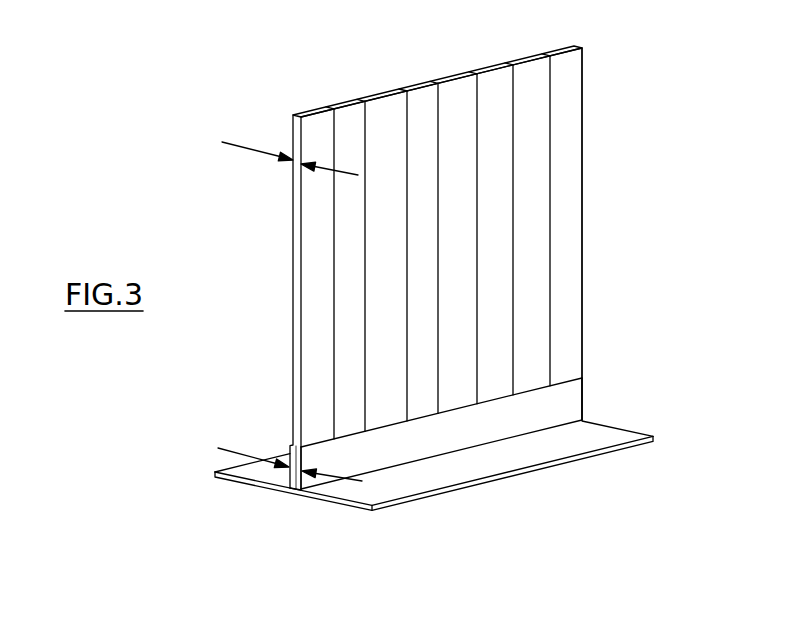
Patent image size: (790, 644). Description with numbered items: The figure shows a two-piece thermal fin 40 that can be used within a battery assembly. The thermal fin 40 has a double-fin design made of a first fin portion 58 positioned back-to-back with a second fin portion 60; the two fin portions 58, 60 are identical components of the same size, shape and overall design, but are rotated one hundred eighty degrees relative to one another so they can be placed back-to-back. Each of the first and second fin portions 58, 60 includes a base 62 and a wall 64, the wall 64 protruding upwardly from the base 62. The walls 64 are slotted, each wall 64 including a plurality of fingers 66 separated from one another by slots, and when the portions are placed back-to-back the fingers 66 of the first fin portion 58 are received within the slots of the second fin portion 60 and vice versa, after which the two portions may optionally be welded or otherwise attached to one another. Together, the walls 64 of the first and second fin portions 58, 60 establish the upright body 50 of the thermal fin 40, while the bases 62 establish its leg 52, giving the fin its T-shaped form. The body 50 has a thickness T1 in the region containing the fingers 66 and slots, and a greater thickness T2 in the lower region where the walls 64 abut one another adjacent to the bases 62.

The thermal fin 40 is at (622, 46).
The body 50 is at (590, 158).
The leg 52 is at (288, 513).
The first fin portion 58 is at (278, 314).
The second fin portion 60 is at (592, 252).
The base 62 is at (248, 488).
The wall 64 is at (280, 399).
The fingers 66 is at (341, 104).
The thickness T1 is at (245, 148).
The thickness T2 is at (223, 448).